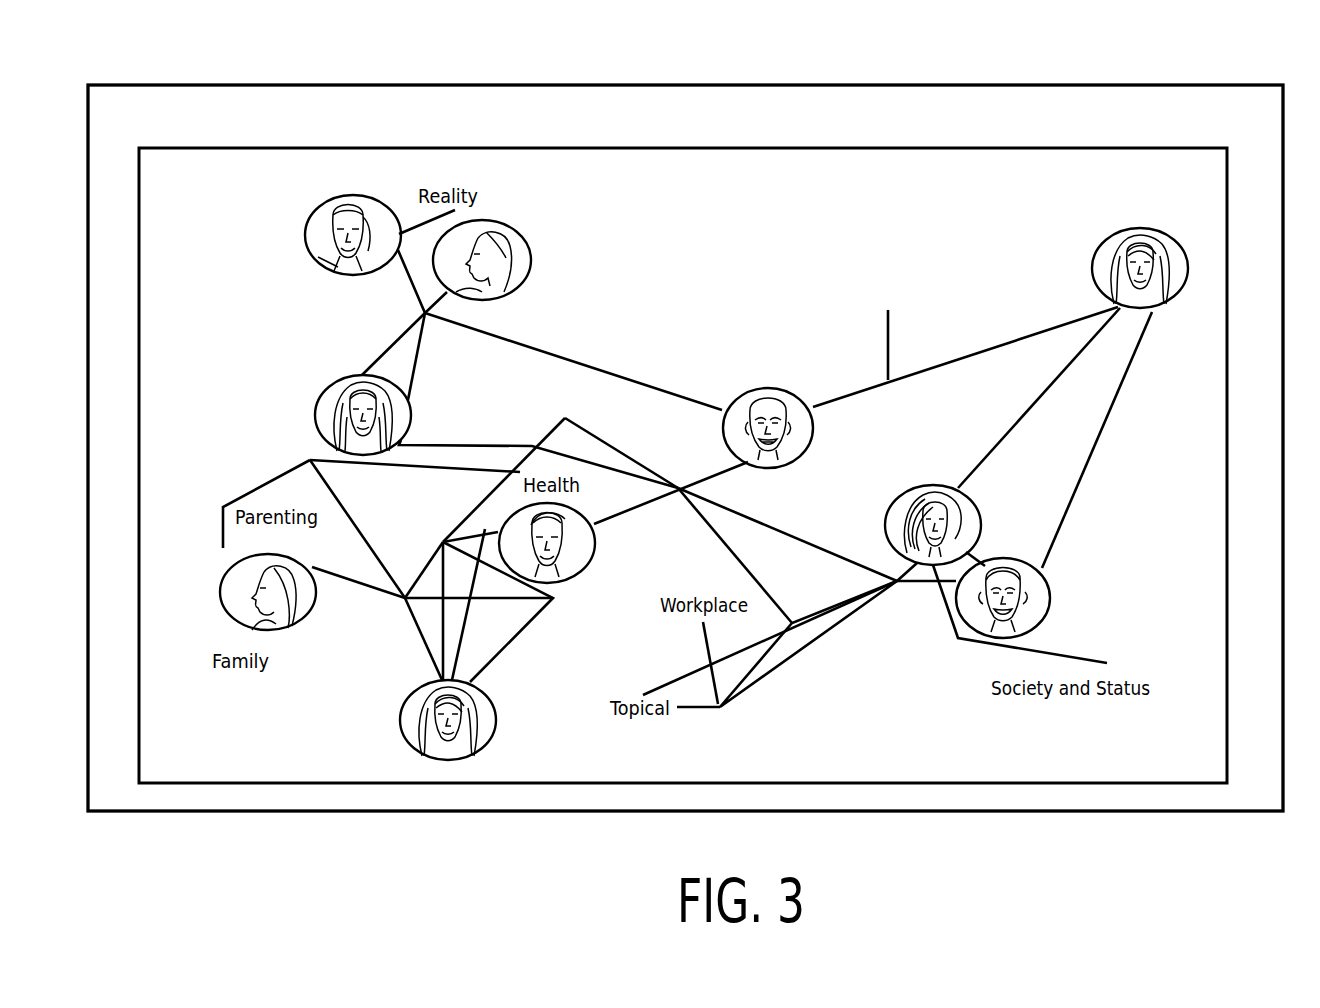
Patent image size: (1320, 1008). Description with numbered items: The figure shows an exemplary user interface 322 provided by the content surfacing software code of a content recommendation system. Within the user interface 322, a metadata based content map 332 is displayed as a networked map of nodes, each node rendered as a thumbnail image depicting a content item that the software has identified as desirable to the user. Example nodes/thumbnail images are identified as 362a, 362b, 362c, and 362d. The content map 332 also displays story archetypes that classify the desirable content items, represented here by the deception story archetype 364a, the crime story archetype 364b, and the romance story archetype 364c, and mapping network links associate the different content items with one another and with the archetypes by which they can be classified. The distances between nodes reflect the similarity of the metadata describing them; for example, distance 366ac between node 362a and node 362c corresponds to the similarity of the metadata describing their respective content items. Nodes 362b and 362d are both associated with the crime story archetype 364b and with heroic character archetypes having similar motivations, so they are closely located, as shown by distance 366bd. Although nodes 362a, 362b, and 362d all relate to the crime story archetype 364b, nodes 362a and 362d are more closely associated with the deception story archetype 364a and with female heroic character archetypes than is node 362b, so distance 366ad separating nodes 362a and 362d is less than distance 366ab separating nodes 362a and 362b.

The user interface 322 is at (1243, 56).
The metadata based content map 332 is at (871, 183).
The node/thumbnail image 362a is at (1102, 244).
The node/thumbnail image 362b is at (1052, 593).
The node/thumbnail image 362c is at (758, 388).
The node/thumbnail image 362d is at (900, 485).
The deception story archetype 364a is at (842, 297).
The crime story archetype 364b is at (1046, 428).
The romance story archetype 364c is at (593, 389).
The distance 366ab is at (1074, 495).
The distance 366ac is at (1037, 328).
The distance 366ad is at (993, 440).
The distance 366bd is at (970, 548).